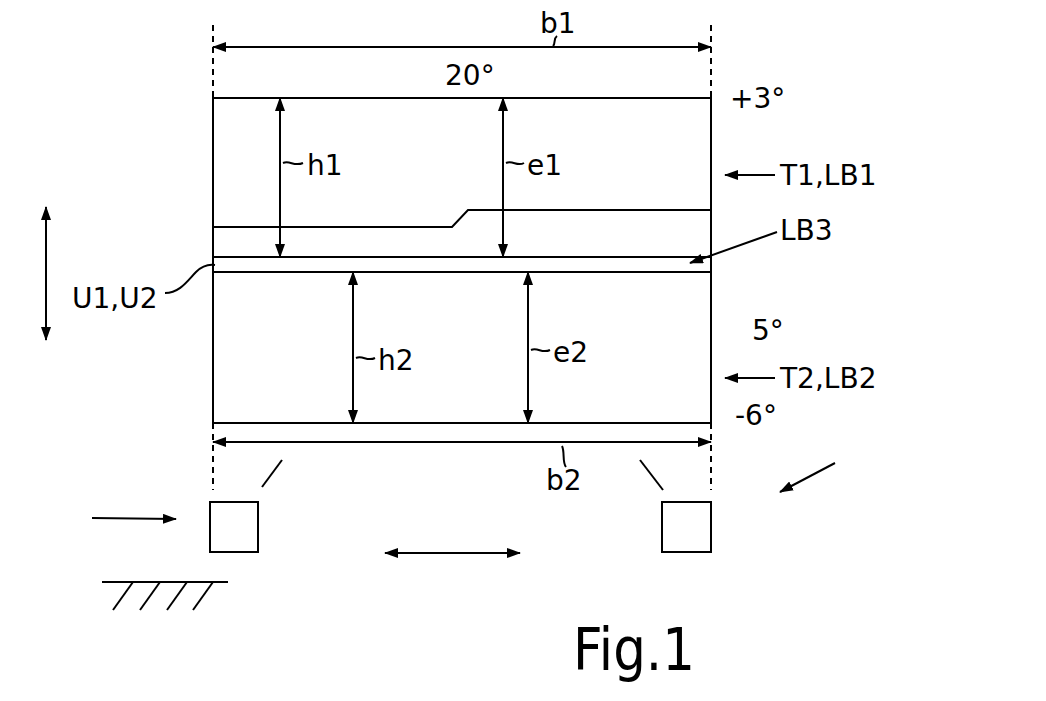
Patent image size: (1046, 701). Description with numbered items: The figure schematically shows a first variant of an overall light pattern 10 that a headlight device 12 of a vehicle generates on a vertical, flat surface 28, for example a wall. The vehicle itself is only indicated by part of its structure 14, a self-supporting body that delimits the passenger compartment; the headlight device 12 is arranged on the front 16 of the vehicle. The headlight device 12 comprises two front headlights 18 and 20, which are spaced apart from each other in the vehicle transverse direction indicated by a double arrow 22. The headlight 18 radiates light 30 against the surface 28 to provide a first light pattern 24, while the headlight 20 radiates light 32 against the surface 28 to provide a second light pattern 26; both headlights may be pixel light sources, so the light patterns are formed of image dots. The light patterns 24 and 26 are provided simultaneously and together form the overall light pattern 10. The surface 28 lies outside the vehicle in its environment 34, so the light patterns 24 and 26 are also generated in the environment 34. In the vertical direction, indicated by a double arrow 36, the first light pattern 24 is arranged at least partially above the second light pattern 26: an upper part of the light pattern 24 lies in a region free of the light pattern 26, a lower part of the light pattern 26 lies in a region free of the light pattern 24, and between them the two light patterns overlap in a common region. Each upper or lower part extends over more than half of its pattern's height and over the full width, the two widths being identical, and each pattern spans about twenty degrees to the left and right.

The overall light pattern 10 is at (642, 111).
The headlight device 12 is at (114, 520).
The structure 14 is at (207, 592).
The front 16 is at (827, 468).
The headlight 18 is at (235, 525).
The headlight 20 is at (700, 525).
The double arrow 22 is at (445, 553).
The first light pattern 24 is at (699, 169).
The second light pattern 26 is at (690, 319).
The surface 28 is at (212, 207).
The light 30 is at (210, 473).
The light 32 is at (709, 477).
The environment 34 is at (143, 134).
The double arrow 36 is at (48, 262).